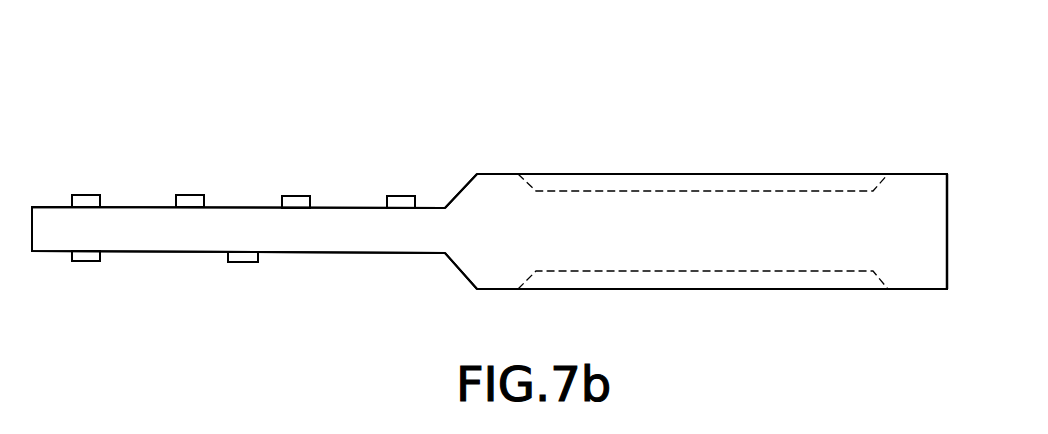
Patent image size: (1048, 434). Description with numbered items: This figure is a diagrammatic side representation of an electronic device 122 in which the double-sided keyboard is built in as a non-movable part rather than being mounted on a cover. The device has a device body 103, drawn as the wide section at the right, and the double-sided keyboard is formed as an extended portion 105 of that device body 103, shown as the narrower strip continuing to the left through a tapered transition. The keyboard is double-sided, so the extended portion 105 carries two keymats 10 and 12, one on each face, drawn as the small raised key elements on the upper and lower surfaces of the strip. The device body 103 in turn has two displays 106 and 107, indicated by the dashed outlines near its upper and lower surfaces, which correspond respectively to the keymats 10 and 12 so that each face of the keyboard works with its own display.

The keymat 10 is at (209, 144).
The keymat 12 is at (284, 292).
The electronic device 122 is at (665, 96).
The extended portion 105 is at (410, 232).
The device body 103 is at (933, 213).
The display 106 is at (852, 180).
The display 107 is at (835, 280).